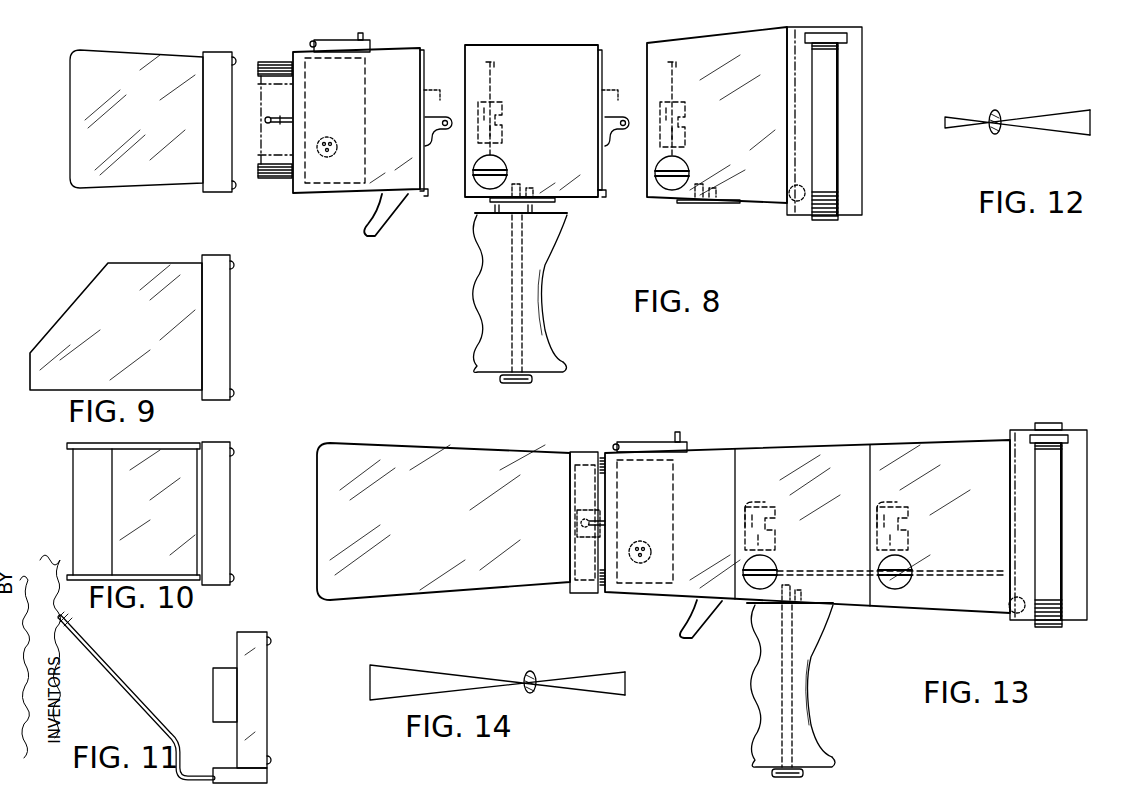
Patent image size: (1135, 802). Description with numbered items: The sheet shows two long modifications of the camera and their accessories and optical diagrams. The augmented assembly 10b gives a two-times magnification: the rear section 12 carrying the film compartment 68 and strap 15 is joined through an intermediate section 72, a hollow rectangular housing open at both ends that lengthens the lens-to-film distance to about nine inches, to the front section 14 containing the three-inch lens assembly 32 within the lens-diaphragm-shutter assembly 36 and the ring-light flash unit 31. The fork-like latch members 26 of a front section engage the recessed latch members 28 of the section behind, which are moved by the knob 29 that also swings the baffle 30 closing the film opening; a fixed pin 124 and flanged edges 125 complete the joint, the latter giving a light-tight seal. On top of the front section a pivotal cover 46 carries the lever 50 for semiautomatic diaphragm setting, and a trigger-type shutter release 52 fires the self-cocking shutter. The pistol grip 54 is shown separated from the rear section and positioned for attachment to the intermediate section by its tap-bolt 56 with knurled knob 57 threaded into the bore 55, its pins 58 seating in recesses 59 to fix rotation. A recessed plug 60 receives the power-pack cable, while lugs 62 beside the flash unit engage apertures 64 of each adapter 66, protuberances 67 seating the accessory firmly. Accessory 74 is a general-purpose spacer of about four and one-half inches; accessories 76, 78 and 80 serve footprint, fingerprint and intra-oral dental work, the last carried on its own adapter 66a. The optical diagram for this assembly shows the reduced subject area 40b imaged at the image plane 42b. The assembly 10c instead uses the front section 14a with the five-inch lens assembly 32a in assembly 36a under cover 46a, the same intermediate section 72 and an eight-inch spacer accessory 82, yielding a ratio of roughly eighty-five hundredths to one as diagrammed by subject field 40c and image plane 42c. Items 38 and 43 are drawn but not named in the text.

In FIG. 8, the augmented assembly 10b is at (684, 220).
In FIG. 13, the camera components assembly 10c is at (874, 620).
In FIG. 8, the rear section 12 is at (762, 207).
In FIG. 13, the rear section 12 is at (938, 614).
In FIG. 8, the front section 14 is at (390, 43).
In FIG. 13, the front section 14a is at (637, 598).
In FIG. 8, the strap 15 is at (838, 116).
In FIG. 13, the strap 15 is at (1062, 528).
In FIG. 8, the latch members 26 is at (440, 133).
In FIG. 13, the latch members 26 is at (820, 502).
In FIG. 8, the latch members 28 is at (503, 126).
In FIG. 13, the latch members 28 is at (776, 528).
In FIG. 8, the knob 29 is at (501, 166).
In FIG. 13, the knob 29 is at (773, 566).
In FIG. 8, the baffle 30 is at (492, 77).
In FIG. 13, the baffle 30 is at (945, 572).
In FIG. 8, the electronic flash unit 31 is at (282, 179).
In FIG. 13, the electronic flash unit 31 is at (573, 490).
In FIG. 12, the lens assembly 32 is at (1000, 128).
In FIG. 14, the lens assembly 32a is at (536, 692).
In FIG. 8, the lens-diaphragm-shutter assembly 36 is at (365, 93).
In FIG. 13, the lens-diaphragm-shutter assembly 36a is at (675, 500).
In FIG. 8, the latch assembly 38 is at (432, 107).
In FIG. 12, the subject area 40b is at (944, 128).
In FIG. 14, the field area of the subject 40c is at (368, 697).
In FIG. 8, the image plane and image 42b is at (797, 200).
In FIG. 12, the image plane and image 42b is at (1086, 136).
In FIG. 14, the image plane and image 42c is at (627, 683).
In FIG. 13, the image plane and image 42c is at (1019, 614).
In FIG. 8, the cover 43 is at (793, 15).
In FIG. 13, the cover 43 is at (1017, 604).
In FIG. 8, the pivotal cover 46 is at (333, 40).
In FIG. 13, the pivotal cover 46a is at (658, 442).
In FIG. 8, the lever 50 is at (362, 33).
In FIG. 13, the lever 50 is at (677, 432).
In FIG. 8, the shutter release 52 is at (377, 218).
In FIG. 13, the shutter release 52 is at (696, 616).
In FIG. 8, the pistol grip 54 is at (546, 272).
In FIG. 13, the pistol grip 54 is at (814, 681).
In FIG. 8, the threaded bore 55 is at (530, 188).
In FIG. 13, the threaded bore 55 is at (800, 595).
In FIG. 8, the tap-bolt 56 is at (511, 280).
In FIG. 13, the tap-bolt 56 is at (781, 671).
In FIG. 8, the knurled knob 57 is at (512, 384).
In FIG. 13, the knurled knob 57 is at (792, 777).
In FIG. 8, the pins 58 is at (534, 209).
In FIG. 8, the recesses 59 is at (490, 201).
In FIG. 8, the recessed plug 60 is at (332, 134).
In FIG. 13, the recessed plug 60 is at (646, 542).
In FIG. 8, the lugs 62 is at (280, 116).
In FIG. 13, the lugs 62 is at (576, 534).
In FIG. 13, the fastener apertures 64 is at (579, 506).
In FIG. 8, the adapter 66 is at (220, 201).
In FIG. 9, the adapter 66 is at (231, 303).
In FIG. 10, the adapter 66 is at (231, 489).
In FIG. 13, the adapter 66 is at (590, 451).
In FIG. 11, the mounting block 66a is at (268, 689).
In FIG. 8, the protuberances 67 is at (233, 60).
In FIG. 13, the protuberances 67 is at (602, 596).
In FIG. 8, the compartment 68 is at (862, 184).
In FIG. 13, the compartment 68 is at (1010, 436).
In FIG. 8, the intermediate section 72 is at (508, 42).
In FIG. 13, the intermediate section 72 is at (807, 443).
In FIG. 8, the accessory 74 is at (142, 50).
In FIG. 9, the accessory 76 is at (62, 312).
In FIG. 10, the accessory 78 is at (136, 517).
In FIG. 11, the accessory 80 is at (131, 683).
In FIG. 13, the spacer accessory 82 is at (488, 594).
In FIG. 8, the fixed pin 124 is at (426, 194).
In FIG. 8, the flanged edge 125 is at (428, 90).